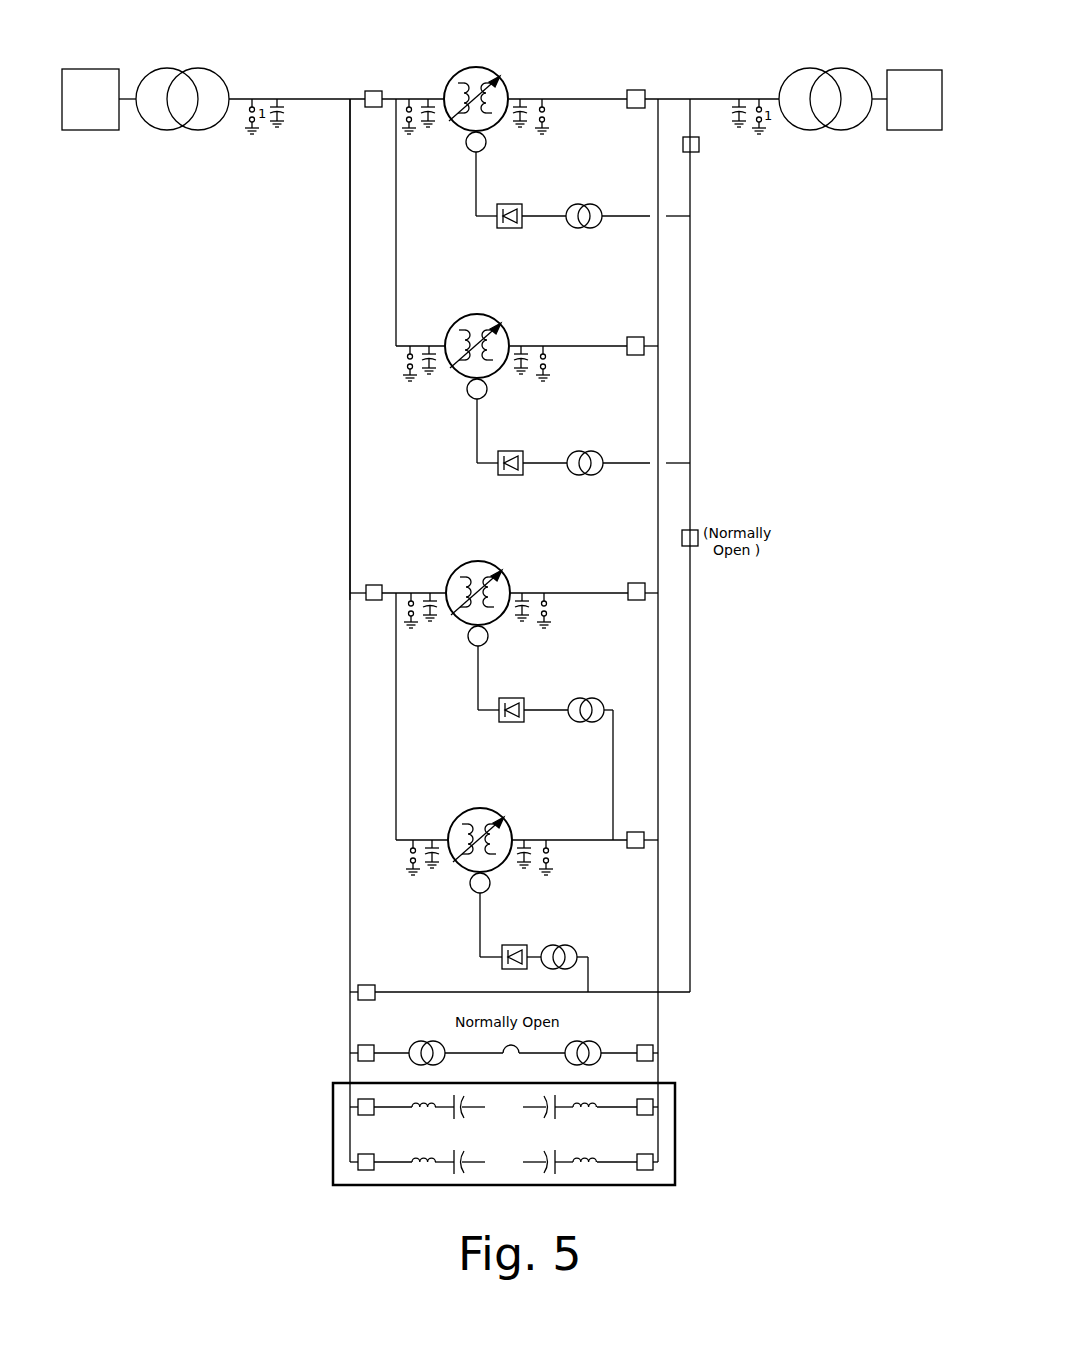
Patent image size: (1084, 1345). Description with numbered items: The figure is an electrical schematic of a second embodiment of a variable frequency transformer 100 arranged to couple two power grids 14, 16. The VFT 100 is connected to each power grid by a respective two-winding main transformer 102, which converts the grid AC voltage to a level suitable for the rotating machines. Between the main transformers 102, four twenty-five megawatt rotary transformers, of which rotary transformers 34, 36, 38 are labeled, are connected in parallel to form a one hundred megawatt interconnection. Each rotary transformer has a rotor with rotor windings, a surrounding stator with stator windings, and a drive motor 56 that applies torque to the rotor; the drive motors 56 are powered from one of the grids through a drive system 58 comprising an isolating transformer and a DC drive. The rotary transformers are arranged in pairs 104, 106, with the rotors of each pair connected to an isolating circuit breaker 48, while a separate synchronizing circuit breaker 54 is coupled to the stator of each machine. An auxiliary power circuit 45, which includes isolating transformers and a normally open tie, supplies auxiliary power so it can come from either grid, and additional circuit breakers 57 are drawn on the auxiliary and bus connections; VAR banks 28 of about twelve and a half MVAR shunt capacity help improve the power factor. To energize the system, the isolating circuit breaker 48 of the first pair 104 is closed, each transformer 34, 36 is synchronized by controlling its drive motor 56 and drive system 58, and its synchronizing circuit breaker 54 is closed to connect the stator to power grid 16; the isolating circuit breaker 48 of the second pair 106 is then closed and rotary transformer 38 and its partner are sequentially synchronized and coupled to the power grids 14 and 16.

The power grid 14 is at (89, 69).
The power grid 16 is at (910, 70).
The VAR bank 28 is at (676, 1133).
The rotary transformer 34 is at (498, 77).
The rotary transformer 36 is at (502, 325).
The rotary transformer 38 is at (500, 815).
The auxiliary power circuit 45 is at (528, 1047).
The isolating circuit breaker 48 is at (373, 90).
The synchronizing circuit breaker 54 is at (635, 90).
The drive motor 56 is at (467, 152).
The circuit breaker 57 is at (700, 150).
The drive system 58 is at (548, 220).
The variable frequency transformer 100 is at (252, 513).
The two-winding main transformer 102 is at (185, 131).
The pair of rotary transformers 104 is at (467, 286).
The pair of rotary transformers 106 is at (448, 768).